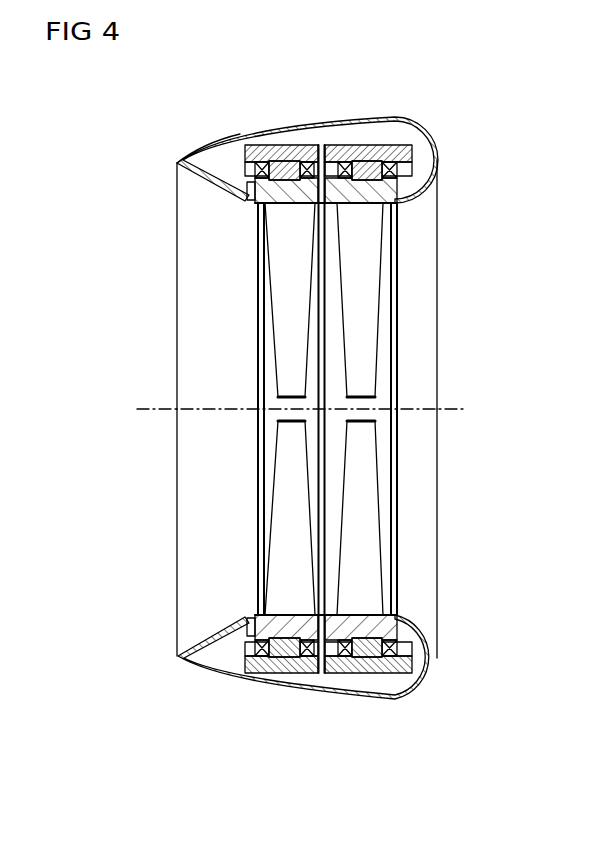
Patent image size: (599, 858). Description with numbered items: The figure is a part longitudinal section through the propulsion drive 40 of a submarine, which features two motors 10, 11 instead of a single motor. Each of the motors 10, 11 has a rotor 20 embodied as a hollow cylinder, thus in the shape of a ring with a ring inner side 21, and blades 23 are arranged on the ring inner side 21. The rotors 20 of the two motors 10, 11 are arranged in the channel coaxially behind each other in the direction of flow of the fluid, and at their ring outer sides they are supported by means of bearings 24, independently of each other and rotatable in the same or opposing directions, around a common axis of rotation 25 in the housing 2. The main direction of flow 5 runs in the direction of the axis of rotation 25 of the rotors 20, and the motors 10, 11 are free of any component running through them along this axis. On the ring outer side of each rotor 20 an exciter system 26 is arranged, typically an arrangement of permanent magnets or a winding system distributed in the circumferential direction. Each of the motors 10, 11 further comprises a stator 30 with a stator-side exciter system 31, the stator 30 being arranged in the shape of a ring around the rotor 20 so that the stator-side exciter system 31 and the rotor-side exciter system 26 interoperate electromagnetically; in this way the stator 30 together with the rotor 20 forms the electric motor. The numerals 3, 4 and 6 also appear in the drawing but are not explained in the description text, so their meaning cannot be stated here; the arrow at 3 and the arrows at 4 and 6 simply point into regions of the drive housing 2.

The housing 2 is at (212, 140).
The stator 3 is at (208, 299).
The rotor 4 is at (409, 283).
The main direction of flow 5 is at (412, 361).
The stator winding 6 is at (208, 512).
The motor 10 is at (385, 545).
The motor 11 is at (268, 548).
The rotor 20 is at (268, 188).
The ring inner side 21 is at (373, 207).
The blades 23 is at (370, 382).
The bearings 24 is at (398, 167).
The axis of rotation 25 is at (165, 408).
The exciter system 26 is at (293, 160).
The stator 30 is at (250, 146).
The stator-side exciter system 31 is at (285, 162).
The propulsion drive 40 is at (186, 128).